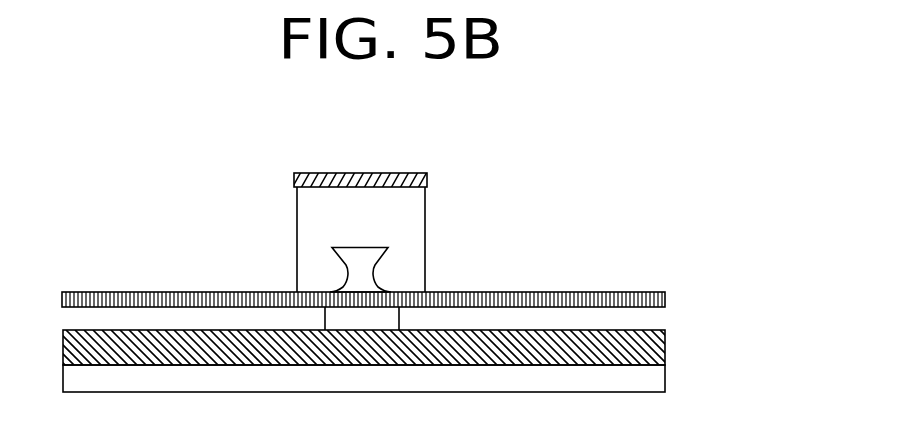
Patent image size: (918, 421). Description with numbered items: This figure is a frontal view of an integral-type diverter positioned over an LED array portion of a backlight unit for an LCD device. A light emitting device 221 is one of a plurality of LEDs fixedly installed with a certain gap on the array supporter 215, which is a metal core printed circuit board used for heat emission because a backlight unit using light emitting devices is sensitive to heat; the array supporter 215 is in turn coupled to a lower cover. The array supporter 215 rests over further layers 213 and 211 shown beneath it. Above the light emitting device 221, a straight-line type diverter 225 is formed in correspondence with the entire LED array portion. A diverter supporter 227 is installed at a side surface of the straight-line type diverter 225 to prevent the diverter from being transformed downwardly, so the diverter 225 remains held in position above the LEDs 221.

The substrate 211 is at (654, 377).
The buffer layer 213 is at (653, 342).
The array supporter 215 is at (628, 290).
The light emitting device 221 is at (377, 269).
The straight-line type diverter 225 is at (427, 176).
The diverter supporter 227 is at (426, 230).